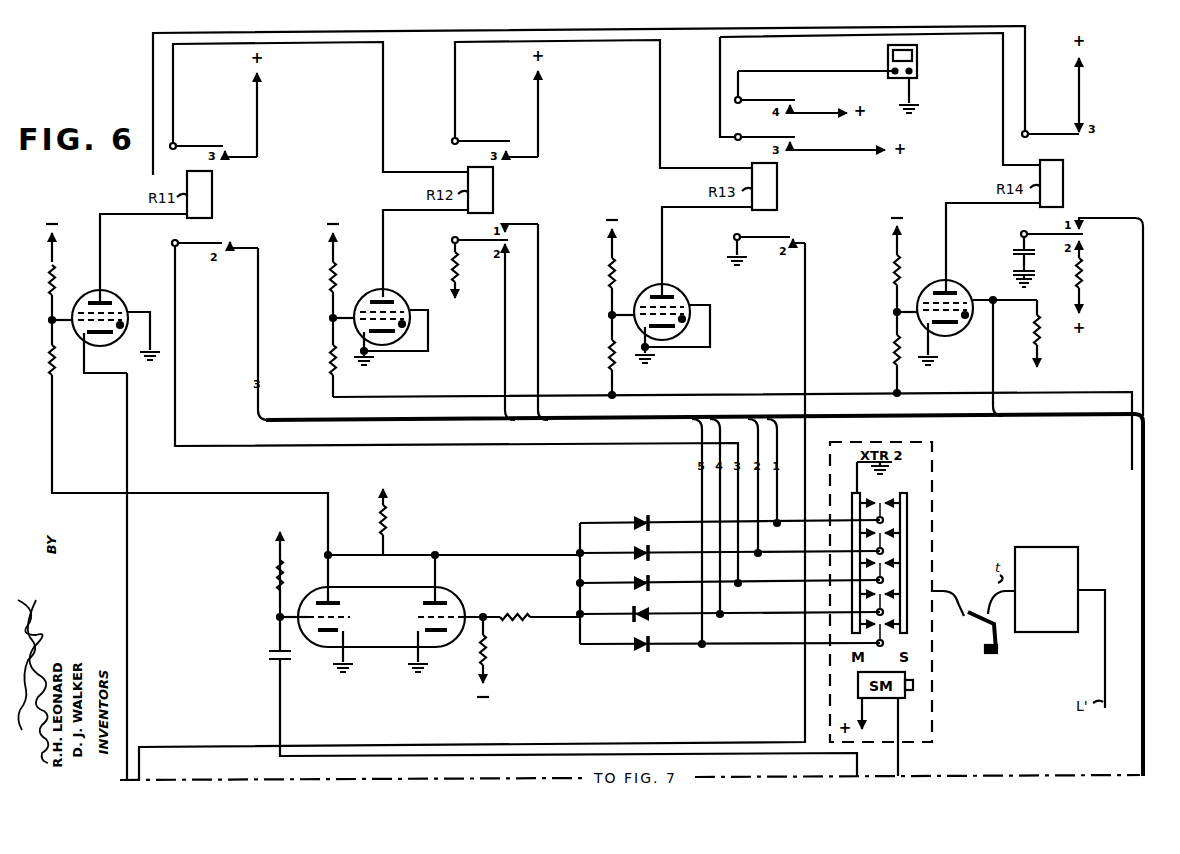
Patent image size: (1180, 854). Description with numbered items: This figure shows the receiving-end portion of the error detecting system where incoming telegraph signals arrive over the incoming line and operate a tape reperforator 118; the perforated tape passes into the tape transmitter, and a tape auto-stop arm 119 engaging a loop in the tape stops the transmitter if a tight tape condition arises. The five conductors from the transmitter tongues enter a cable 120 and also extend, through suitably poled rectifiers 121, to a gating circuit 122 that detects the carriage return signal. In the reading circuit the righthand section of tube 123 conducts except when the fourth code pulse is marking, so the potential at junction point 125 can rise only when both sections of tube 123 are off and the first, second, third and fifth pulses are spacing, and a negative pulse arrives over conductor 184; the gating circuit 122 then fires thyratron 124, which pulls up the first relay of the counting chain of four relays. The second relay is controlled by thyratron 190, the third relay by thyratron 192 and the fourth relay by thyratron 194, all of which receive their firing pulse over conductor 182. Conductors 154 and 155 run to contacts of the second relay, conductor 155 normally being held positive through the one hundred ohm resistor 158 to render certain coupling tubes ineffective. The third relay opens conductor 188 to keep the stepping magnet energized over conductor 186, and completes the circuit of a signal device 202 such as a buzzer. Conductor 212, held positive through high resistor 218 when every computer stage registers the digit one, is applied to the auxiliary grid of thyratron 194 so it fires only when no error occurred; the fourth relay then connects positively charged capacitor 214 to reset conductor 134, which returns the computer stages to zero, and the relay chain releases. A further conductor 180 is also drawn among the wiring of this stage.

The tape reperforator 118 is at (1060, 530).
The tape auto-stop arm 119 is at (978, 633).
The cable 120 is at (666, 420).
The rectifiers 121 is at (648, 501).
The gating circuit 122 is at (432, 549).
The tube 123 is at (352, 645).
The thyratron tube 124 is at (110, 298).
The junction point 125 is at (379, 572).
The reset conductor 134 is at (1142, 320).
The conductor 154 is at (540, 353).
The conductor 155 is at (503, 355).
The resistor 158 is at (451, 264).
The conductor 180 is at (128, 604).
The conductor 182 is at (455, 396).
The conductor 184 is at (278, 722).
The conductor 186 is at (902, 761).
The conductor 188 is at (802, 351).
The thyratron 190 is at (366, 293).
The thyratron 192 is at (672, 290).
The thyratron 194 is at (914, 291).
The signal device 202 is at (919, 70).
The conductor 212 is at (991, 374).
The capacitor 214 is at (1013, 258).
The resistor 218 is at (1035, 335).